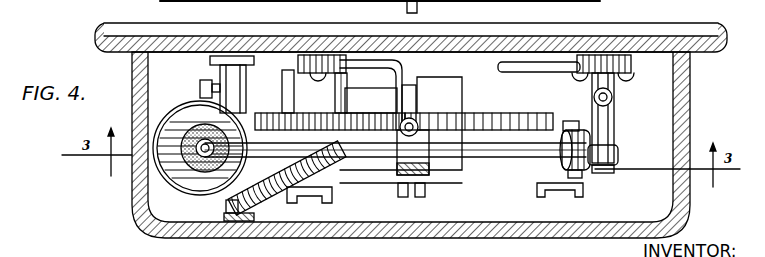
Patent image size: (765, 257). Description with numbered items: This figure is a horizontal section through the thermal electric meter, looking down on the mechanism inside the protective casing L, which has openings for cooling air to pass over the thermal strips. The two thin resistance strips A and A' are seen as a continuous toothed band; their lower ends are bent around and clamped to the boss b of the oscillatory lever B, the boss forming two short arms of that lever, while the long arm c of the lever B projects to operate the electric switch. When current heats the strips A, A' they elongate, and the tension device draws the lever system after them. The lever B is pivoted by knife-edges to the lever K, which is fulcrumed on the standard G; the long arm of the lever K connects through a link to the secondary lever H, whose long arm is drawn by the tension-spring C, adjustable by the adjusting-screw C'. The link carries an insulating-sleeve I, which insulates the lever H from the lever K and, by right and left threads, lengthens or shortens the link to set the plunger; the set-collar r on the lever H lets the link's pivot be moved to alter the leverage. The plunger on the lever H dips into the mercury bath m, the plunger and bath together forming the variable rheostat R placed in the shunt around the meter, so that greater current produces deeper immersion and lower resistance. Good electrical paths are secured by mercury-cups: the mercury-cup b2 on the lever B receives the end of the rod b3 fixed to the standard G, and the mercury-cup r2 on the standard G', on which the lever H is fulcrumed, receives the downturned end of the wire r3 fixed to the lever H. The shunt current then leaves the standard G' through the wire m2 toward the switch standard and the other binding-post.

The casing L is at (411, 139).
The mercury bath m is at (180, 125).
The variable rheostat R is at (202, 150).
The secondary lever H is at (440, 150).
The tension-spring C is at (287, 179).
The adjusting-screw C' is at (227, 210).
The metal strip A is at (330, 111).
The metal strip A' is at (479, 112).
The standard G is at (314, 66).
The wire or rod b3 is at (410, 126).
The lever B is at (396, 102).
The mercury-cup b2 is at (418, 124).
The lever K is at (445, 185).
The boss b is at (413, 170).
The long arm c is at (400, 176).
The wire m2 is at (539, 75).
The set-collar r is at (568, 121).
The mercury-cup r2 is at (612, 97).
The wire r3 is at (608, 124).
The standard G' is at (614, 152).
The insulating-sleeve I is at (582, 166).